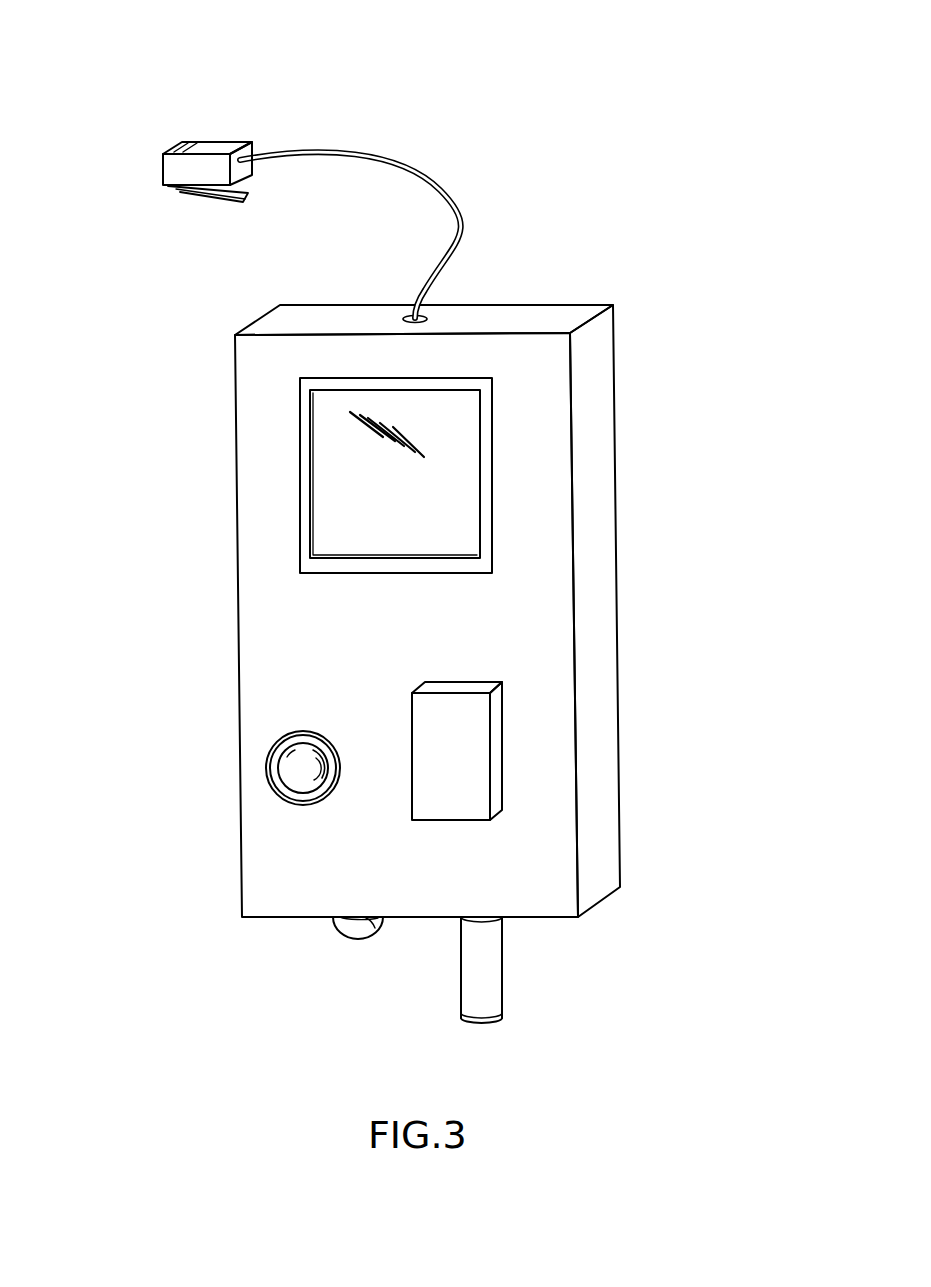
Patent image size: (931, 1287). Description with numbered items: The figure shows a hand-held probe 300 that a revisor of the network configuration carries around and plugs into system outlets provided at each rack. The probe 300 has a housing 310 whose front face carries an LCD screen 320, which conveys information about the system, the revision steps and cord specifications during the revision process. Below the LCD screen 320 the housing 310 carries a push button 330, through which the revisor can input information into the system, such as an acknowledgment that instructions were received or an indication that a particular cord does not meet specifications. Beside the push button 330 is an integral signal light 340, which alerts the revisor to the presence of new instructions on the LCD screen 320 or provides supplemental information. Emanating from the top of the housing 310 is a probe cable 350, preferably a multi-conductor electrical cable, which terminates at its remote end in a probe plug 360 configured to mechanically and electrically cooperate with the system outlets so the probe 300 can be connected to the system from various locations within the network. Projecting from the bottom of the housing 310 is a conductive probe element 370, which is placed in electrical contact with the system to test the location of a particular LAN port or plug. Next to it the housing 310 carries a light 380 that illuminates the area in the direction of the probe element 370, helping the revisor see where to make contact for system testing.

The probe 300 is at (538, 200).
The housing 310 is at (595, 466).
The LCD screen 320 is at (325, 438).
The push button 330 is at (462, 757).
The signal light 340 is at (293, 777).
The probe cable 350 is at (397, 163).
The probe plug 360 is at (210, 147).
The conductive probe element 370 is at (493, 995).
The light 380 is at (360, 930).